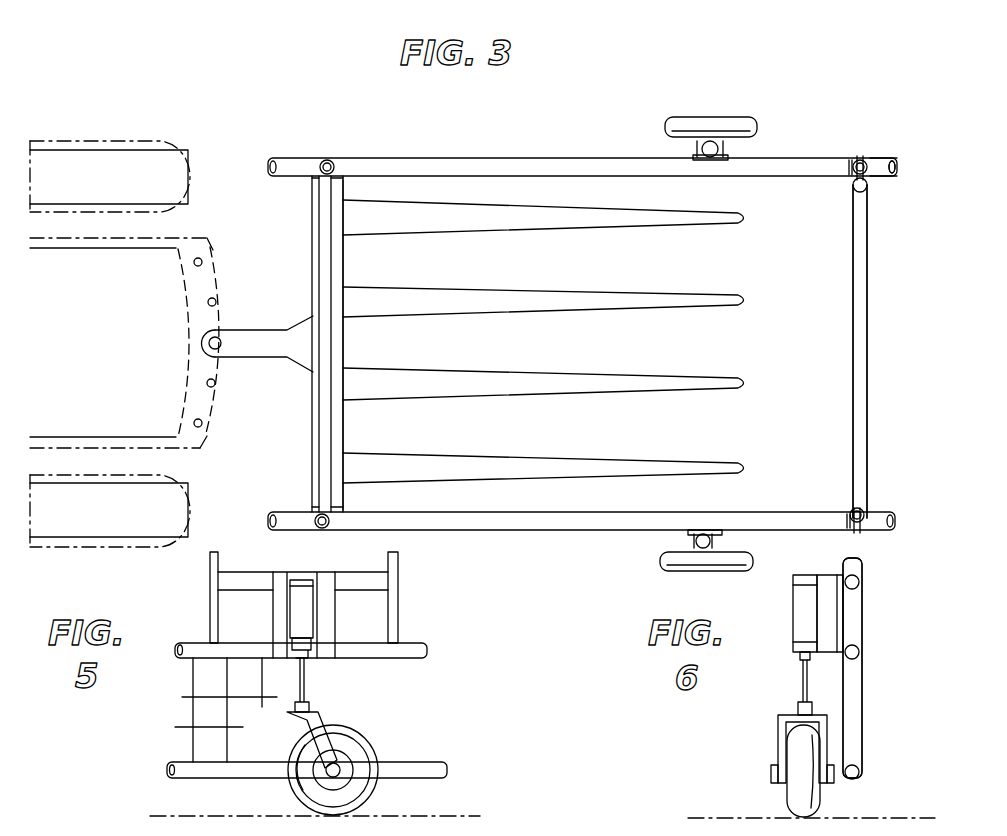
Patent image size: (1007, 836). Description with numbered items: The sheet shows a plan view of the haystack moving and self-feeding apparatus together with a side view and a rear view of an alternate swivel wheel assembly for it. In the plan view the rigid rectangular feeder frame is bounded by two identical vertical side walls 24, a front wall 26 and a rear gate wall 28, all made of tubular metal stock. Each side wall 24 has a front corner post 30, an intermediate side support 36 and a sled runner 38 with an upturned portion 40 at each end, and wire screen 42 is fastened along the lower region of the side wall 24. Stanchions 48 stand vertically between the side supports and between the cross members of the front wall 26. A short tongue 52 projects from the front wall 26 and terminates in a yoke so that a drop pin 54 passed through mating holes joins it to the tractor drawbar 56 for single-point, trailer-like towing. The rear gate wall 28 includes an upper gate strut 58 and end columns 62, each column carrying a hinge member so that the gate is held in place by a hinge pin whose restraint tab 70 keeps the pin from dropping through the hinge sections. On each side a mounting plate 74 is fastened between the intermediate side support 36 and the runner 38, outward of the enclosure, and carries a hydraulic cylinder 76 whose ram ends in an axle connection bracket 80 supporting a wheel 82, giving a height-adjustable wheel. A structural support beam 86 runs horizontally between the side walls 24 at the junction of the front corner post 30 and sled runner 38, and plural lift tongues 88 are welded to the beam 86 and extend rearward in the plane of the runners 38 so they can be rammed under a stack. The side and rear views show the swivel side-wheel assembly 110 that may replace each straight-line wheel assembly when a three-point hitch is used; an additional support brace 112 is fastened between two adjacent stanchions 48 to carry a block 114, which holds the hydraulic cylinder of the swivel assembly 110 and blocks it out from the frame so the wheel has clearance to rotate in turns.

In FIG. 3, the vertical side wall 24 is at (545, 157).
In FIG. 3, the front wall 26 is at (310, 434).
In FIG. 3, the rear gate wall 28 is at (864, 378).
In FIG. 3, the front corner post 30 is at (325, 158).
In FIG. 6, the intermediate side support 36 is at (860, 650).
In FIG. 5, the sled runner 38 is at (425, 778).
In FIG. 6, the sled runner 38 is at (858, 777).
In FIG. 3, the upturned portion 40 is at (895, 160).
In FIG. 5, the wire screen 42 is at (190, 712).
In FIG. 5, the stanchion 48 is at (210, 605).
In FIG. 3, the tongue 52 is at (262, 330).
In FIG. 3, the drop pin 54 is at (208, 343).
In FIG. 3, the drawbar 56 is at (213, 283).
In FIG. 3, the upper gate strut 58 is at (868, 292).
In FIG. 3, the end column 62 is at (862, 508).
In FIG. 3, the restraint tab 70 is at (862, 160).
In FIG. 3, the mounting plate 74 is at (722, 535).
In FIG. 3, the hydraulic cylinder 76 is at (696, 541).
In FIG. 3, the axle connection bracket 80 is at (728, 145).
In FIG. 3, the wheel 82 is at (662, 560).
In FIG. 3, the structural support beam 86 is at (345, 256).
In FIG. 3, the lift tongue 88 is at (612, 233).
In FIG. 5, the swivel side-wheel assembly 110 is at (380, 722).
In FIG. 6, the swivel side-wheel assembly 110 is at (755, 745).
In FIG. 5, the support brace 112 is at (366, 580).
In FIG. 6, the support brace 112 is at (858, 588).
In FIG. 5, the block 114 is at (325, 658).
In FIG. 6, the block 114 is at (820, 652).